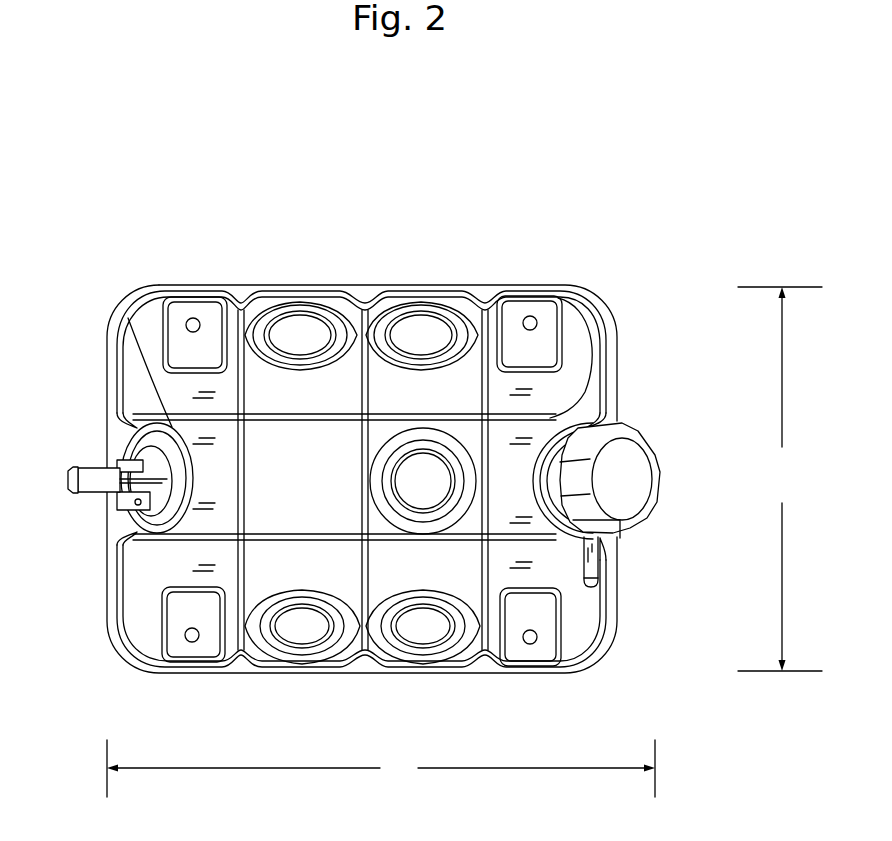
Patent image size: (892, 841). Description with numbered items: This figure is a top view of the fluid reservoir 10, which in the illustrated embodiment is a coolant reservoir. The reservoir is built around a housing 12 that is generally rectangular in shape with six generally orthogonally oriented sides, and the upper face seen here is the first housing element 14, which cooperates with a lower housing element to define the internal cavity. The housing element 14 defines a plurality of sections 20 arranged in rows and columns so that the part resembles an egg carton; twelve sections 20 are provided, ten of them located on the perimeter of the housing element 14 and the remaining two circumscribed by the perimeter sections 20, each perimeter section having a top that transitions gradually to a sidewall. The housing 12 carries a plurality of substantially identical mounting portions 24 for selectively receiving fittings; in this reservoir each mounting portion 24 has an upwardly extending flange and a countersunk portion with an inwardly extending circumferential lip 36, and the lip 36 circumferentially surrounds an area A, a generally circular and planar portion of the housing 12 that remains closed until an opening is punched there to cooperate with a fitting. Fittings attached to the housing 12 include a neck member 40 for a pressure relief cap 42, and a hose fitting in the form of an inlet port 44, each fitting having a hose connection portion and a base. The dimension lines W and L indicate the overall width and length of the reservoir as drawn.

The fluid reservoir 10 is at (533, 194).
The housing 12 is at (638, 324).
The first housing element 14 is at (140, 316).
The sections 20 is at (297, 463).
The mounting portion 24 is at (301, 312).
The inwardly extending circumferential lip 36 is at (313, 654).
The neck member 40 is at (557, 477).
The pressure relief cap 42 is at (623, 503).
The inlet port 44 is at (88, 483).
The area A is at (302, 626).
The width W is at (780, 479).
The length L is at (381, 768).